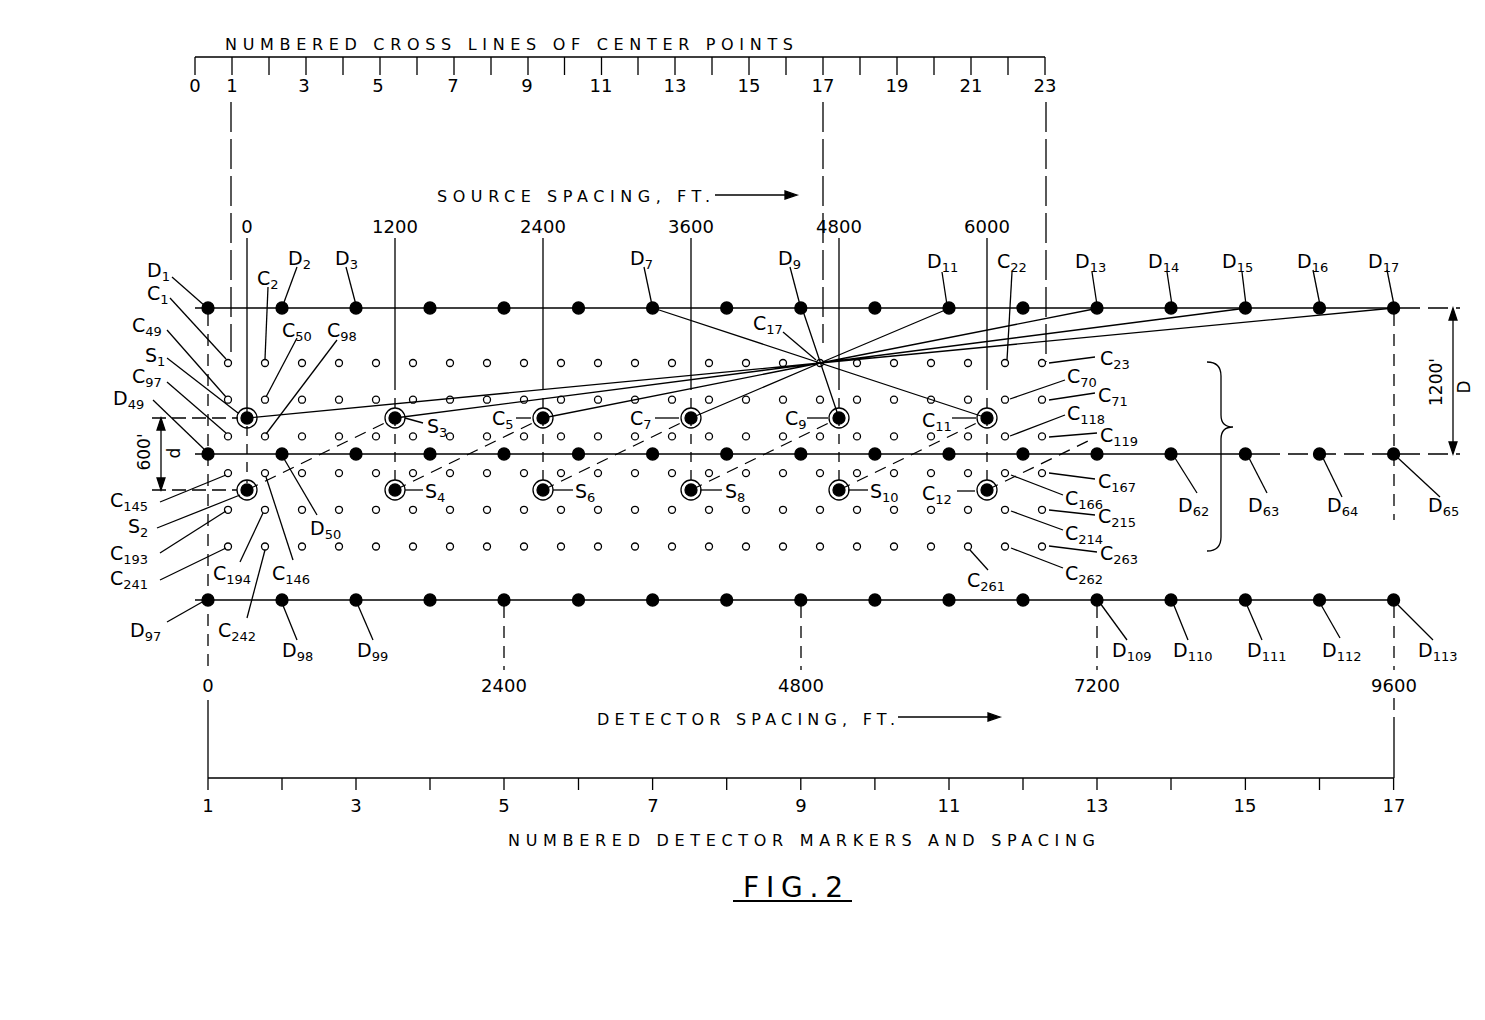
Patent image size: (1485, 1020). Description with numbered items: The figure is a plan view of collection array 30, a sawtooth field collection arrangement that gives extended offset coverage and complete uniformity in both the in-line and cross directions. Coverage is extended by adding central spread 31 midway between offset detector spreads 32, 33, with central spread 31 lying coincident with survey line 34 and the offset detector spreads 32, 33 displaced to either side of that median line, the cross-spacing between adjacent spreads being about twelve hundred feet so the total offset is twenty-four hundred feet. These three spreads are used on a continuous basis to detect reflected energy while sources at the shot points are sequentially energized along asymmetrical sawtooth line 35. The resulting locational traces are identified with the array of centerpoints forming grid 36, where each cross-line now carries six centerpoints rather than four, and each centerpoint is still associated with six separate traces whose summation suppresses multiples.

The collection array 30 is at (1286, 200).
The central detector spread 31 is at (668, 456).
The offset detector spread 32 is at (472, 306).
The offset detector spread 33 is at (695, 602).
The survey line 34 is at (1283, 453).
The asymmetrical sawtooth line 35 is at (1028, 485).
The grid 36 is at (1236, 456).